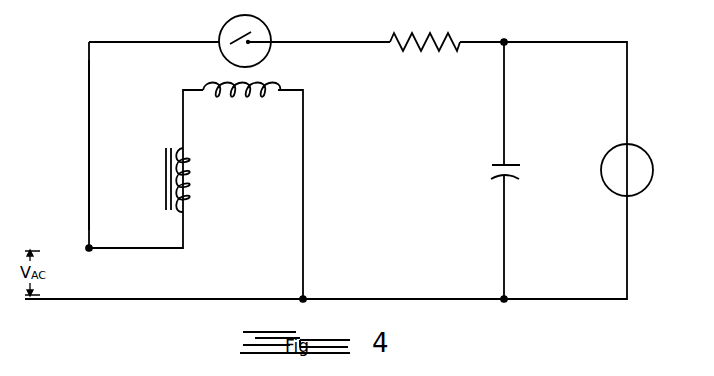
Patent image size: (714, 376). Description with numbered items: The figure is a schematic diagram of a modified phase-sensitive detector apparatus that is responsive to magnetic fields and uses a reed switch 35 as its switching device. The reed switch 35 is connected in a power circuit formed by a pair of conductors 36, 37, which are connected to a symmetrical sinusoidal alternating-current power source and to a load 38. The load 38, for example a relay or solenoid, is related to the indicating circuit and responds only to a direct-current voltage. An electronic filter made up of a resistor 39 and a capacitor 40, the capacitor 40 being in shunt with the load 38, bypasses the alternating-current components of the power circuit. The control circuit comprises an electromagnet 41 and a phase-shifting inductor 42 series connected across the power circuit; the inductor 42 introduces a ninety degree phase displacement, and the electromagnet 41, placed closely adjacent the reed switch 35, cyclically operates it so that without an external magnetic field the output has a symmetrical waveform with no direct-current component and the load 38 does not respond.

The reed switch 35 is at (268, 31).
The conductor 36 is at (88, 185).
The conductor 37 is at (176, 298).
The load 38 is at (601, 166).
The resistor 39 is at (430, 48).
The capacitor 40 is at (511, 171).
The electromagnet 41 is at (239, 96).
The phase-shifting inductor 42 is at (191, 176).